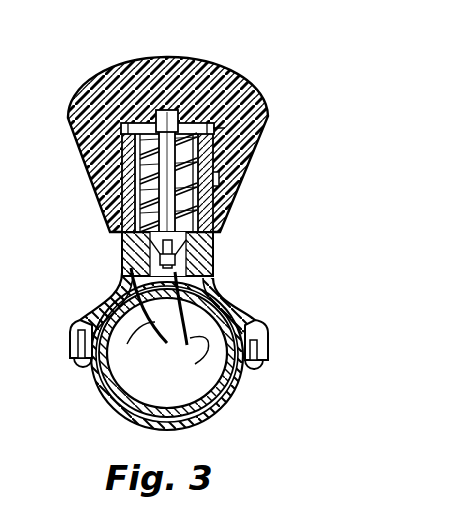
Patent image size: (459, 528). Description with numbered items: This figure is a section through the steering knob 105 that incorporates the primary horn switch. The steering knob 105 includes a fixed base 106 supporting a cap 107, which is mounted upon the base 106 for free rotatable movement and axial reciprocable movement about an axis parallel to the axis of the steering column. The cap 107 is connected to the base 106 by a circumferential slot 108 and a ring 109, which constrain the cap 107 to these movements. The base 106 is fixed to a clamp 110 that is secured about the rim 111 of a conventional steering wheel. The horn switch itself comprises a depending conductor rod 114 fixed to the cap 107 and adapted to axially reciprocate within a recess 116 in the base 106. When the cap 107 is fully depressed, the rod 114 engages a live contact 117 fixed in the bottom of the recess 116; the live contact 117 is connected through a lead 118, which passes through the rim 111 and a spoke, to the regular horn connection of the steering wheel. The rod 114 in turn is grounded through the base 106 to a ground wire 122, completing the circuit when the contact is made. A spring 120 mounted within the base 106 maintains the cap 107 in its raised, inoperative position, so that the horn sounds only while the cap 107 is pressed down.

The steering knob 105 is at (268, 70).
The fixed base 106 is at (215, 255).
The cap 107 is at (140, 76).
The circumferential slot 108 is at (215, 180).
The ring 109 is at (220, 195).
The clamp 110 is at (113, 406).
The rim 111 is at (230, 403).
The depending conductor rod 114 is at (170, 109).
The recess 116 is at (124, 258).
The live contact 117 is at (200, 273).
The lead 118 is at (188, 329).
The spring 120 is at (217, 131).
The ground wire 122 is at (142, 318).